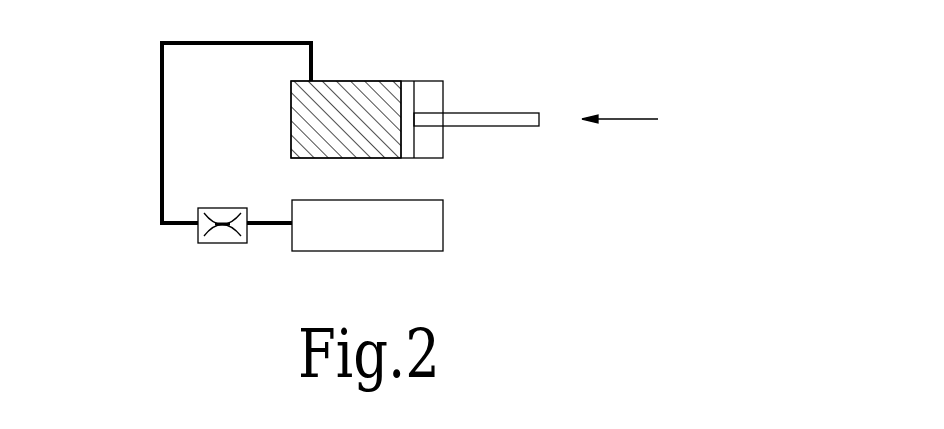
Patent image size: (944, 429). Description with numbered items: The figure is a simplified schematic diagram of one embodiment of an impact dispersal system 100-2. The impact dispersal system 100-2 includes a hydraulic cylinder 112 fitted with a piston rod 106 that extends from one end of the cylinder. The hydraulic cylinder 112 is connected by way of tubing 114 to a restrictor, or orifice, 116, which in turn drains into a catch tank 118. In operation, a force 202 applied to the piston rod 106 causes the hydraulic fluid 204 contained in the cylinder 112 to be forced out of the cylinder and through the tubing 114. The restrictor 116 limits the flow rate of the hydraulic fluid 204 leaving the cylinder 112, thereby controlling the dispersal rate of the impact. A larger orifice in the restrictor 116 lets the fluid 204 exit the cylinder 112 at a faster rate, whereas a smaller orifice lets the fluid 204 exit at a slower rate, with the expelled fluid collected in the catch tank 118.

The impact dispersal system 100-2 is at (530, 181).
The piston rod 106 is at (478, 110).
The hydraulic cylinder 112 is at (367, 88).
The tubing 114 is at (160, 90).
The restrictor 116 is at (222, 244).
The catch tank 118 is at (412, 251).
The force 202 is at (620, 118).
The hydraulic fluid 204 is at (370, 124).